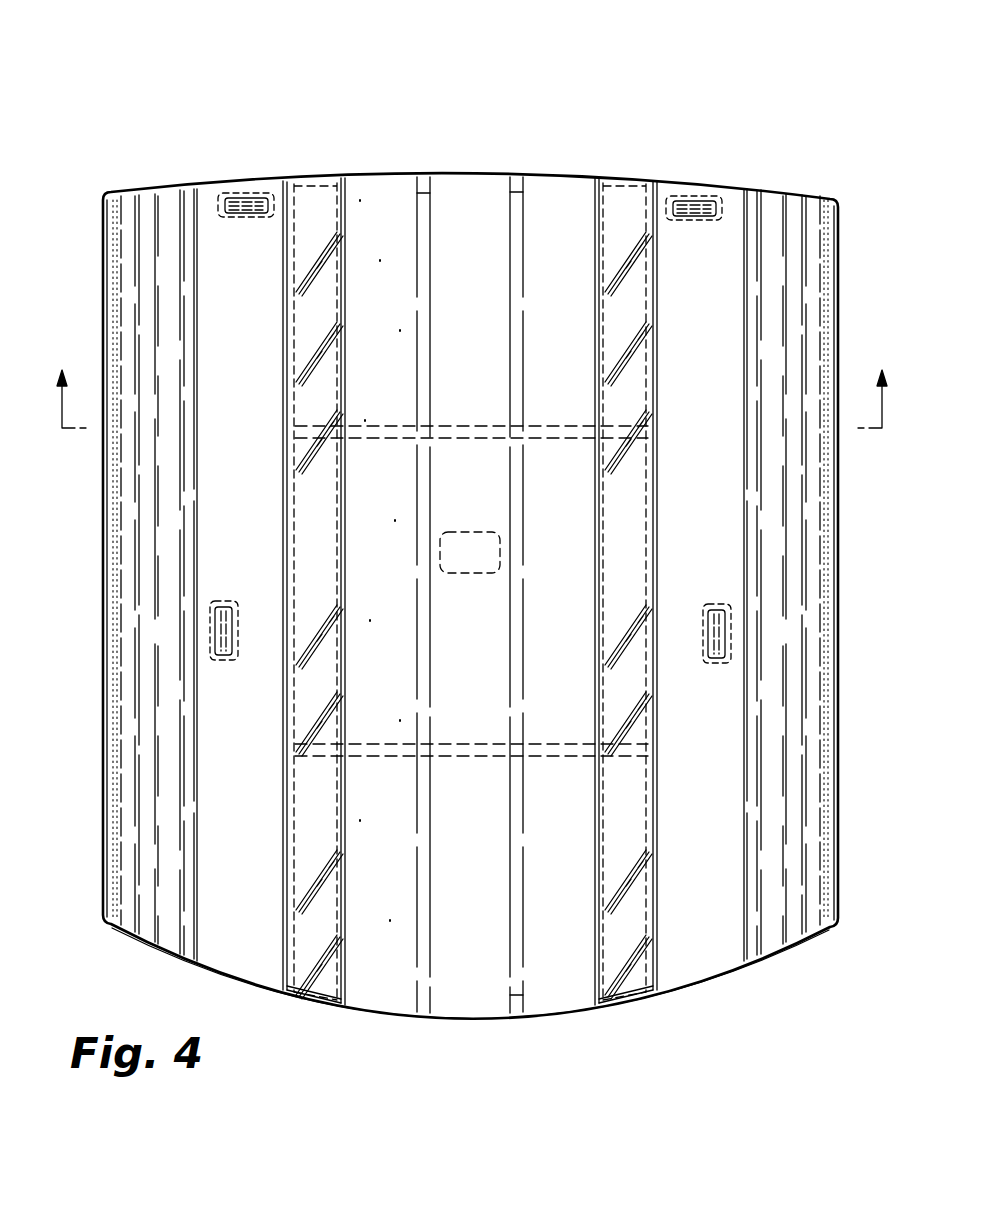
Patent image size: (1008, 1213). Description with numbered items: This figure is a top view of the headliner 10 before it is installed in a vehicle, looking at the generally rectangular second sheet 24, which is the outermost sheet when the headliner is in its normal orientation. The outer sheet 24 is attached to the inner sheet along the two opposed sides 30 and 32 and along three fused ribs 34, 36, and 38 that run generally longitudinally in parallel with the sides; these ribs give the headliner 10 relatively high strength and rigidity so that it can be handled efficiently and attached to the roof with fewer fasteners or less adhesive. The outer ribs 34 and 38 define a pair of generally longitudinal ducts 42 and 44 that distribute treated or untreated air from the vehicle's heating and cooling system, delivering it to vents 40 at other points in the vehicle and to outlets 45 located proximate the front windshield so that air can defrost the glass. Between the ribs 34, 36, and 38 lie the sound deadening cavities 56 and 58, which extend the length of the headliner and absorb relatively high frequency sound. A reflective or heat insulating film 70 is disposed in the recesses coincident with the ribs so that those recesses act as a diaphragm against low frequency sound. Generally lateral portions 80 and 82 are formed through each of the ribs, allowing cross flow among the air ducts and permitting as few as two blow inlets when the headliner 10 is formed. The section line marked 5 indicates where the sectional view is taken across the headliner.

The headliner 10 is at (604, 92).
The second sheet 24 is at (157, 190).
The side 30 is at (840, 590).
The side 32 is at (103, 567).
The fused rib 34 is at (606, 182).
The fused rib 36 is at (441, 290).
The fused rib 38 is at (319, 190).
The vent 40 is at (208, 643).
The duct 42 is at (728, 200).
The duct 44 is at (206, 190).
The outlet 45 is at (245, 186).
The sound deadening cavity 56 is at (540, 215).
The sound deadening cavity 58 is at (372, 193).
The reflective or heat insulating film 70 is at (306, 193).
The lateral portion 80 is at (373, 440).
The lateral portion 82 is at (372, 742).
The section line 5- 5 is at (472, 382).